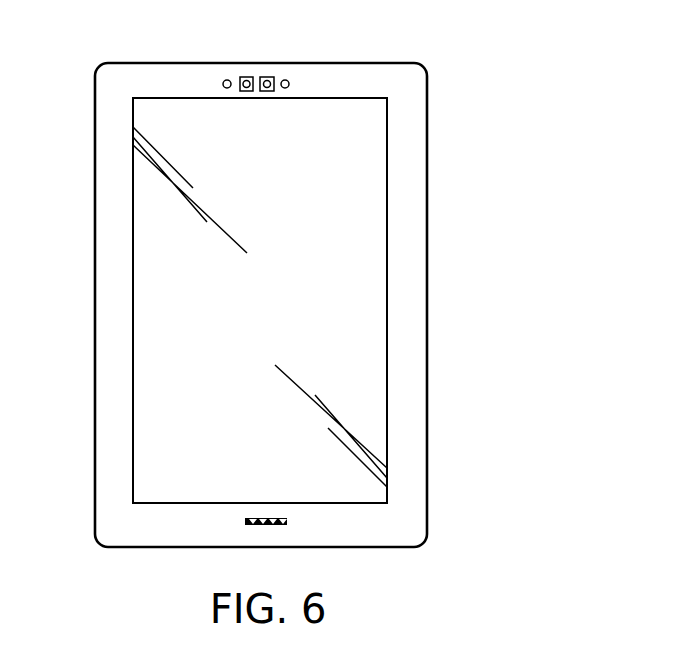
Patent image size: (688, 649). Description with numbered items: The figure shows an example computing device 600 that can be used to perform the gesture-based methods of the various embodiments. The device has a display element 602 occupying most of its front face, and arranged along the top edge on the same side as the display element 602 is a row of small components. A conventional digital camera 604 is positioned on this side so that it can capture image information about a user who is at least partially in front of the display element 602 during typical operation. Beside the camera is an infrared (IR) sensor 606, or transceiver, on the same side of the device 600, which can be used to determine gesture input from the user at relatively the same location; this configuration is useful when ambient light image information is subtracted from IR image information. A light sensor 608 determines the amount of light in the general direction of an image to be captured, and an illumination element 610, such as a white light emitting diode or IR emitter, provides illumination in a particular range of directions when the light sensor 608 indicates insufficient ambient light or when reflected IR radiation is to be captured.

The computing device 600 is at (569, 116).
The display element 602 is at (133, 110).
The digital camera 604 is at (247, 77).
The infrared (IR) sensor 606 is at (267, 77).
The light sensor 608 is at (289, 82).
The illumination element 610 is at (224, 82).